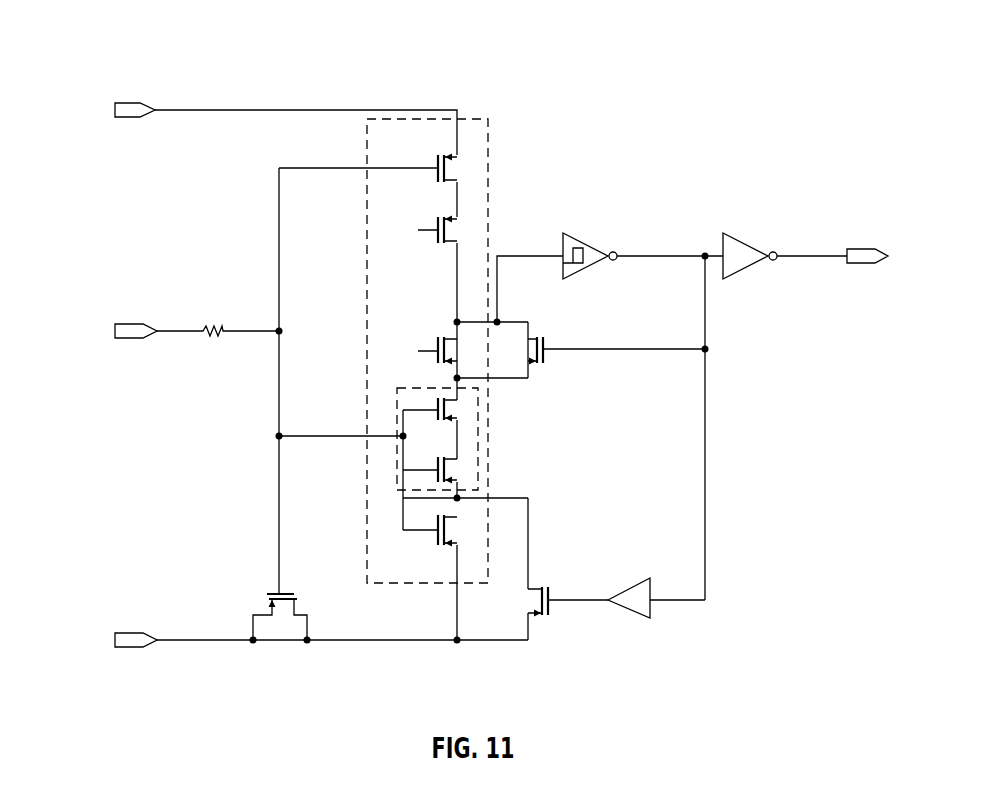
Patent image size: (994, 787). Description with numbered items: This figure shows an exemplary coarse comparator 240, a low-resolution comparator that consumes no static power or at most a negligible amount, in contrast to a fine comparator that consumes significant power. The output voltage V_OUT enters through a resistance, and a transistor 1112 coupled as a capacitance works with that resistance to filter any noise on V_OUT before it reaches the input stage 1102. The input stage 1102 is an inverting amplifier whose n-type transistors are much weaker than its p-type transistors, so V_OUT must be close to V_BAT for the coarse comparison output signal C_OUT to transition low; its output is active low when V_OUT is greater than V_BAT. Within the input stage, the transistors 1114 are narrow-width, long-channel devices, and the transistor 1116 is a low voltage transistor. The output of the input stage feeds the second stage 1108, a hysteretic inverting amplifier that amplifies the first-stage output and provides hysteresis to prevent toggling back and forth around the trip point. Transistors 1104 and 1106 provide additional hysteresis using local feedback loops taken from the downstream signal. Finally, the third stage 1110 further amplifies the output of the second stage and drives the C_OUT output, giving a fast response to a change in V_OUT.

The coarse comparator 240 is at (76, 72).
The input stage 1102 is at (422, 118).
The transistor 1104 is at (548, 337).
The transistor 1106 is at (542, 583).
The second stage 1108 is at (578, 233).
The third stage 1110 is at (742, 234).
The transistor 1112 is at (270, 606).
The transistors 1114 is at (397, 414).
The transistor 1116 is at (438, 538).